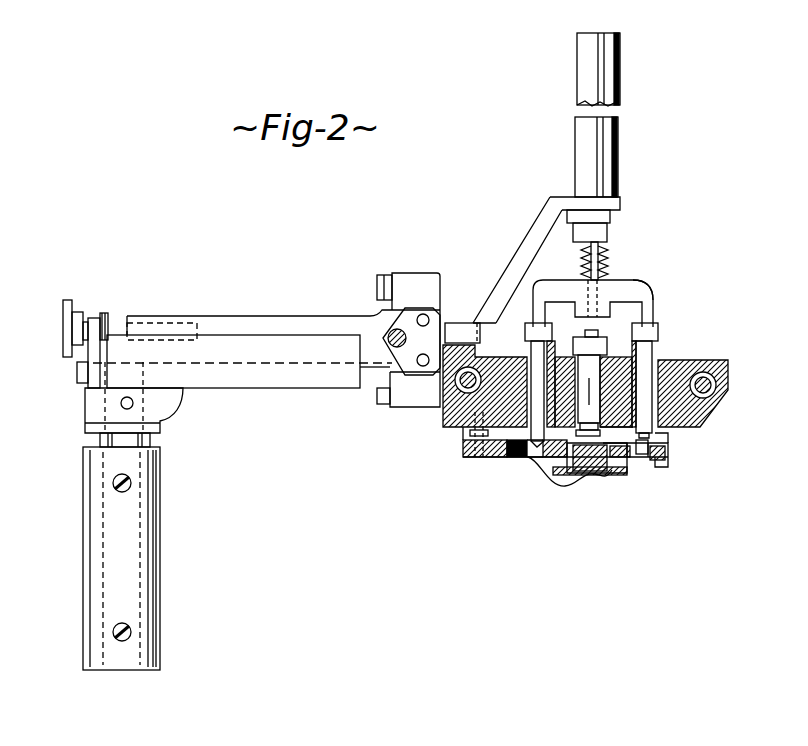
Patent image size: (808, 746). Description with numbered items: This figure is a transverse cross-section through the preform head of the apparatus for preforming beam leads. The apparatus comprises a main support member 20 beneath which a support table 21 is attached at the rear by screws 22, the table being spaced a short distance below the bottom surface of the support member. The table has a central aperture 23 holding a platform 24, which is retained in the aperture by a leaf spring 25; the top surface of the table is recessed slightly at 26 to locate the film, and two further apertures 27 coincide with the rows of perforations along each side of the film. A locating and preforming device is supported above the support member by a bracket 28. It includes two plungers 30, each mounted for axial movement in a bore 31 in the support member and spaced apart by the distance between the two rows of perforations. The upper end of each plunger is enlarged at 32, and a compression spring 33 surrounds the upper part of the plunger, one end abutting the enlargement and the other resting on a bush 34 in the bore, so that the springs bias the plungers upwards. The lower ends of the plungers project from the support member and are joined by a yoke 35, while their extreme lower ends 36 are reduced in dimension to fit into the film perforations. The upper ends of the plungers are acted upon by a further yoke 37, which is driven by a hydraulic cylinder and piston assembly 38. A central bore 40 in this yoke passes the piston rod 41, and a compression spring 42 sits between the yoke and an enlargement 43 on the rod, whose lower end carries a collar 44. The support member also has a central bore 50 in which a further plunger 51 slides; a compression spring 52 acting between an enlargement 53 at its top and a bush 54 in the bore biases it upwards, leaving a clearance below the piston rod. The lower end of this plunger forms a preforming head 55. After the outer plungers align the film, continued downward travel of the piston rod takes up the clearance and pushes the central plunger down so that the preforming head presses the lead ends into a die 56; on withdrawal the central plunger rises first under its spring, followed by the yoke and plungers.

The main support member 20 is at (730, 367).
The support table 21 is at (666, 460).
The screws 22 is at (475, 457).
The central aperture 23 is at (530, 462).
The platform 24 is at (541, 458).
The leaf spring 25 is at (565, 485).
The recess 26 is at (668, 450).
The further apertures 27 is at (519, 462).
The bracket 28 is at (537, 217).
The plungers 30 is at (462, 322).
The bore 31 is at (423, 290).
The enlargement 32 is at (496, 300).
The compression spring 33 is at (549, 282).
The bush 34 is at (468, 412).
The yoke 35 is at (660, 438).
The extreme lower ends 36 is at (512, 461).
The further yoke 37 is at (606, 305).
The hydraulic cylinder and piston assembly 38 is at (622, 84).
The central bore 40 is at (607, 274).
The piston rod 41 is at (612, 234).
The compression spring 42 is at (604, 256).
The enlargement 43 is at (622, 212).
The collar 44 is at (652, 282).
The central bore 50 is at (592, 405).
The further plunger 51 is at (535, 403).
The compression spring 52 is at (552, 281).
The enlargement 53 is at (603, 341).
The bush 54 is at (660, 428).
The preforming head 55 is at (622, 472).
The die 56 is at (597, 442).